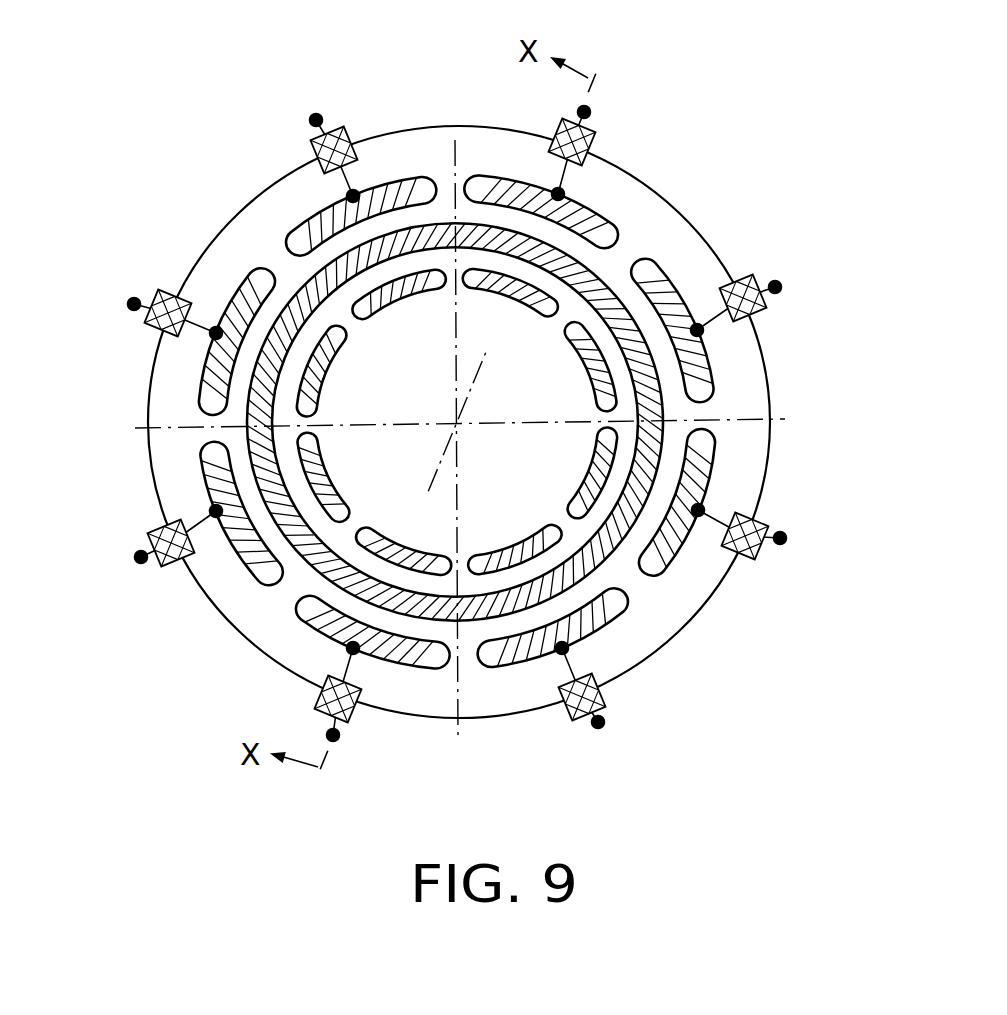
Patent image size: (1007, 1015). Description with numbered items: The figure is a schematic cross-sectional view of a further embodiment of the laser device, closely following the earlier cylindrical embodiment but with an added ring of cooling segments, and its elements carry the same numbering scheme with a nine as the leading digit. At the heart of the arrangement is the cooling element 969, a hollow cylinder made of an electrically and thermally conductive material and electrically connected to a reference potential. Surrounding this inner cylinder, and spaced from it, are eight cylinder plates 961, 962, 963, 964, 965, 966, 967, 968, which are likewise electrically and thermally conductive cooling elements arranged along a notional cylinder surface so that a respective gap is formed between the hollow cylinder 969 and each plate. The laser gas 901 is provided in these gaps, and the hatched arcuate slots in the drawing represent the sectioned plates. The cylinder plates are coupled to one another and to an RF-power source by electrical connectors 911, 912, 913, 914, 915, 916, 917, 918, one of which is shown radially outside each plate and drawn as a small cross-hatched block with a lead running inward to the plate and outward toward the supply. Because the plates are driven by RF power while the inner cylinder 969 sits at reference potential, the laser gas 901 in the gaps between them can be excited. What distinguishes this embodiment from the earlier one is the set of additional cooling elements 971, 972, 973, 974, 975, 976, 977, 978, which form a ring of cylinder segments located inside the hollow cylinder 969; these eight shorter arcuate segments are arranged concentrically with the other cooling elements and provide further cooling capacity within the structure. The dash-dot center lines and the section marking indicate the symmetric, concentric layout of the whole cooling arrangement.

The laser gas 901 is at (601, 216).
The electrical connector 911 is at (781, 275).
The electrical connector 912 is at (796, 537).
The electrical connector 913 is at (607, 731).
The electrical connector 914 is at (336, 757).
The electrical connector 915 is at (146, 566).
The electrical connector 916 is at (118, 319).
The electrical connector 917 is at (303, 118).
The electrical connector 918 is at (599, 104).
The cylinder plate 961 is at (668, 280).
The cylinder plate 962 is at (705, 460).
The cylinder plate 963 is at (606, 615).
The cylinder plate 964 is at (412, 664).
The cylinder plate 965 is at (240, 568).
The cylinder plate 966 is at (205, 383).
The cylinder plate 967 is at (300, 228).
The cylinder plate 968 is at (497, 175).
The hollow cylinder 969 is at (662, 410).
The additional cooling element 971 is at (579, 375).
The additional cooling element 972 is at (571, 472).
The additional cooling element 973 is at (514, 525).
The additional cooling element 974 is at (403, 539).
The additional cooling element 975 is at (333, 471).
The additional cooling element 976 is at (343, 371).
The additional cooling element 977 is at (404, 321).
The additional cooling element 978 is at (510, 309).